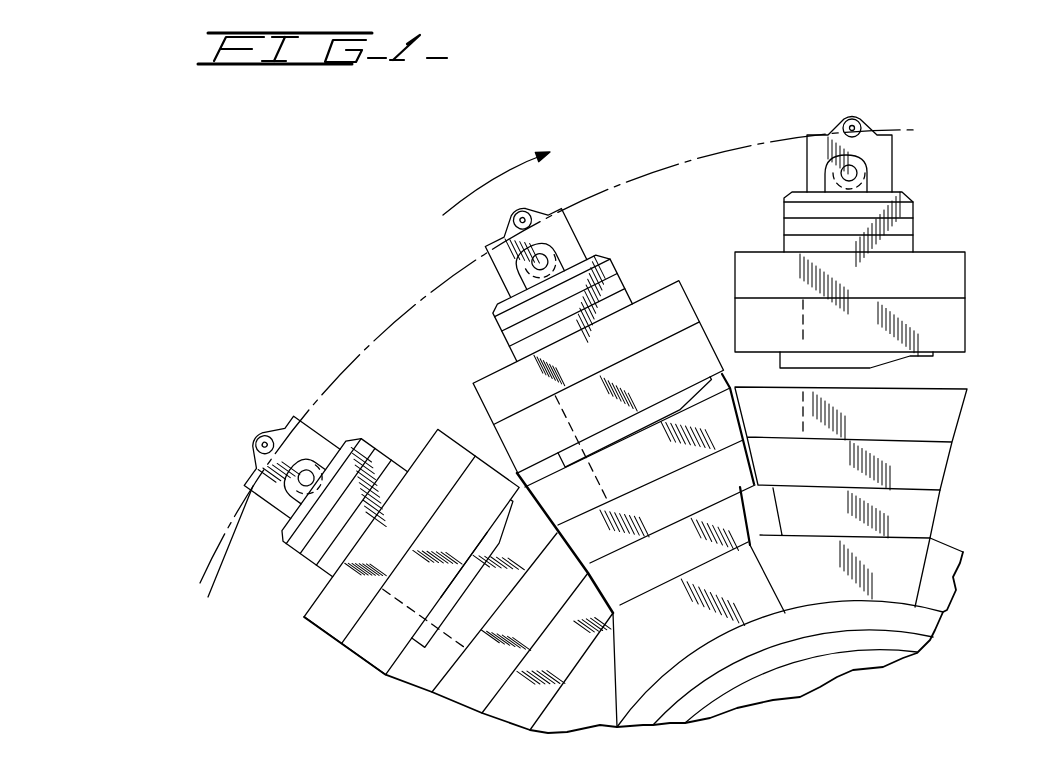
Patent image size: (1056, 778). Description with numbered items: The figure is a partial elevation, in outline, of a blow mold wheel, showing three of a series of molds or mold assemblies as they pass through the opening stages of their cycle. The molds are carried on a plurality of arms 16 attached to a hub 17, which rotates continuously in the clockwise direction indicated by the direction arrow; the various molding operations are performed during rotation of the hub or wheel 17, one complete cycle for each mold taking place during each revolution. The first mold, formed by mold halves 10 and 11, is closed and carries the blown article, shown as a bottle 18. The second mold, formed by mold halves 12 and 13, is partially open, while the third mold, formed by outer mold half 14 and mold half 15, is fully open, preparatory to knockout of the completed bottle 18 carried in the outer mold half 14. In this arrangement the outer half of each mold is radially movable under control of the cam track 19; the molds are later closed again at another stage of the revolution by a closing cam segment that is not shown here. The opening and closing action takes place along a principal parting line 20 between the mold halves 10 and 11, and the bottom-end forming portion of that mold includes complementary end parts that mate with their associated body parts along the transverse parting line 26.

The mold half 10 is at (368, 650).
The mold half 11 is at (427, 676).
The mold half 12 is at (508, 434).
The mold half 13 is at (548, 483).
The outer mold half 14 is at (870, 243).
The mold half 15 is at (950, 418).
The arm 16 is at (330, 445).
The hub 17 is at (957, 537).
The bottle 18 is at (856, 345).
The cam track 19 is at (412, 305).
The principal parting line 20 is at (478, 550).
The transverse parting line 26 is at (418, 612).